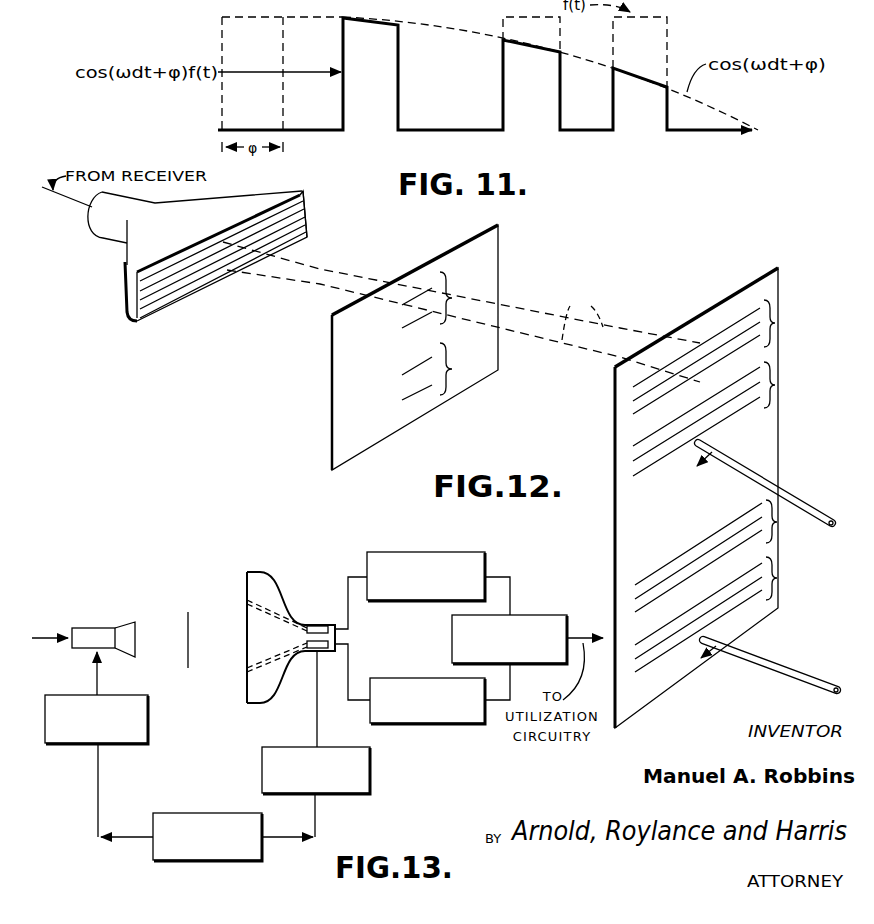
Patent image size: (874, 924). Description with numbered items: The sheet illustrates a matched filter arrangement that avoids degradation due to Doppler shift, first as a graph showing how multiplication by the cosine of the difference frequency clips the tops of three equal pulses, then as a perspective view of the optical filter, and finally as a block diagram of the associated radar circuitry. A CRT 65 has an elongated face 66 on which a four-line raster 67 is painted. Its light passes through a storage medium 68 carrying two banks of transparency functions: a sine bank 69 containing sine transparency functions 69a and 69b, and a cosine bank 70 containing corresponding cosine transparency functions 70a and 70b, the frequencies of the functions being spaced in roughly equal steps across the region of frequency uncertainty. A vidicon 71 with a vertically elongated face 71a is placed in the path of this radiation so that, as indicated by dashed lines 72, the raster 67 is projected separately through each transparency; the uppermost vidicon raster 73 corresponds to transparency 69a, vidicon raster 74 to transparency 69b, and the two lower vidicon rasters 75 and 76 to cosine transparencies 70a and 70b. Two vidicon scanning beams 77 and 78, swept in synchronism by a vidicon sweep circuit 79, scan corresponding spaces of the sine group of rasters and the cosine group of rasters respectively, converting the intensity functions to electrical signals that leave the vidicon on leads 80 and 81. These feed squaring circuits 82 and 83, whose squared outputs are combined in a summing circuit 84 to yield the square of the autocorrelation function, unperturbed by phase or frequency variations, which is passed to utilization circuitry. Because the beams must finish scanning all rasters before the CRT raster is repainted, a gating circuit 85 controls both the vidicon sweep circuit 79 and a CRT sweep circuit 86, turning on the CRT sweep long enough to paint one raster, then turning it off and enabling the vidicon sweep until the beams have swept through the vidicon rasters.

In FIG. 12, the CRT 65 is at (265, 192).
In FIG. 13, the CRT 65 is at (110, 627).
In FIG. 12, the elongated face 66 is at (303, 198).
In FIG. 12, the four-line raster 67 is at (299, 218).
In FIG. 12, the storage medium 68 is at (483, 234).
In FIG. 13, the storage medium 68 is at (188, 612).
In FIG. 12, the sine bank 69 is at (456, 298).
In FIG. 12, the sine transparency function 69a is at (420, 297).
In FIG. 12, the sine transparency function 69b is at (410, 318).
In FIG. 12, the cosine bank 70 is at (456, 369).
In FIG. 12, the cosine transparency function 70a is at (410, 357).
In FIG. 12, the cosine transparency function 70b is at (410, 390).
In FIG. 12, the vidicon 71 is at (780, 285).
In FIG. 13, the vidicon 71 is at (276, 596).
In FIG. 12, the vertically elongated face 71a is at (757, 288).
In FIG. 13, the vertically elongated face 71a is at (247, 592).
In FIG. 12, the dashed lines 72 is at (582, 319).
In FIG. 12, the uppermost vidicon raster 73 is at (775, 323).
In FIG. 12, the vidicon raster 74 is at (775, 385).
In FIG. 12, the vidicon raster 75 is at (777, 522).
In FIG. 12, the vidicon raster 76 is at (777, 578).
In FIG. 12, the vidicon scanning beam 77 is at (792, 498).
In FIG. 13, the vidicon scanning beam 77 is at (283, 620).
In FIG. 12, the vidicon scanning beam 78 is at (786, 666).
In FIG. 13, the vidicon scanning beam 78 is at (285, 650).
In FIG. 13, the vidicon sweep circuit 79 is at (370, 770).
In FIG. 13, the lead 80 is at (348, 625).
In FIG. 13, the lead 81 is at (348, 656).
In FIG. 13, the squaring circuit 82 is at (402, 552).
In FIG. 13, the squaring circuit 83 is at (415, 723).
In FIG. 13, the summing circuit 84 is at (538, 615).
In FIG. 13, the gating circuit 85 is at (198, 813).
In FIG. 13, the CRT sweep circuit 86 is at (148, 727).